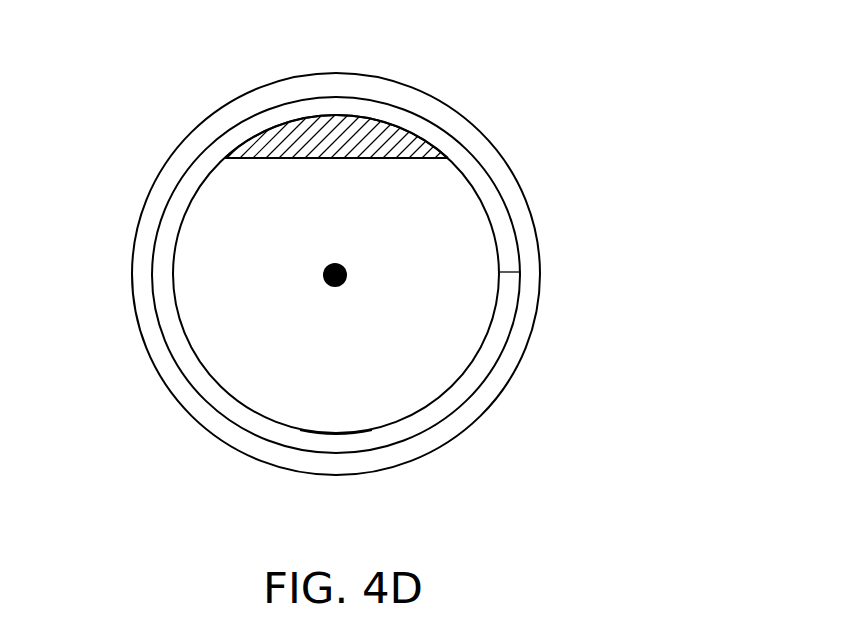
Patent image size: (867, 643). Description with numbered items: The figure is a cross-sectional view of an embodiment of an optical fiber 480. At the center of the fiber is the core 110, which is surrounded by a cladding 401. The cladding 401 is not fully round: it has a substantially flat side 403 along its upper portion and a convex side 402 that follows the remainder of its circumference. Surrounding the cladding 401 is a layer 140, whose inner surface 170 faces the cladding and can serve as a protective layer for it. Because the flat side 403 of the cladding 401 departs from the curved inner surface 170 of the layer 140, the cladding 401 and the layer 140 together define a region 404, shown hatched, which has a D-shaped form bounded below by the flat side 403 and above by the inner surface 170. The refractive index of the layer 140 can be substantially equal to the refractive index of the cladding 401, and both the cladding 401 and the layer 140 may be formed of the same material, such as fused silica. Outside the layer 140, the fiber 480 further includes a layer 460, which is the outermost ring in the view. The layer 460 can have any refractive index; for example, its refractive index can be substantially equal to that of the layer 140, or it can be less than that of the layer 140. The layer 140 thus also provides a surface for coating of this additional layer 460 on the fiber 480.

The optical fiber 480 is at (616, 113).
The layer 460 is at (477, 405).
The layer 140 is at (495, 343).
The cladding 401 is at (250, 365).
The inner surface 170 is at (327, 437).
The convex side 402 is at (521, 272).
The region 404 is at (355, 140).
The substantially flat side 403 is at (430, 141).
The core 110 is at (323, 276).